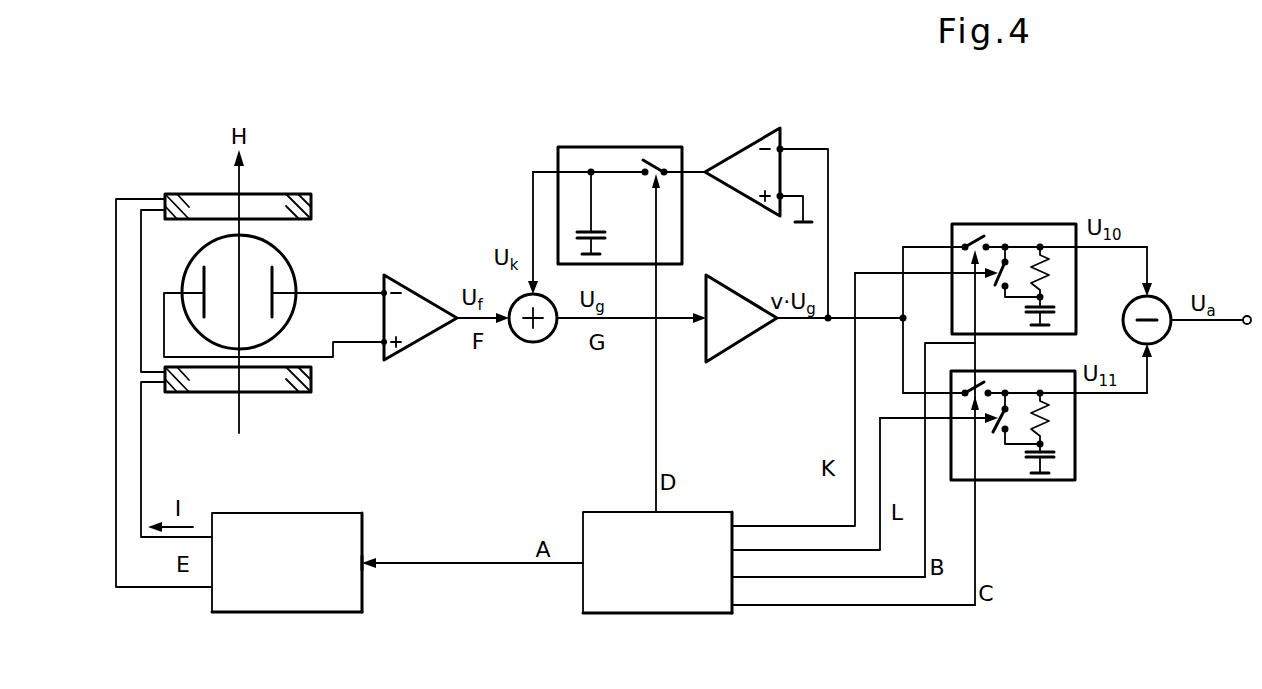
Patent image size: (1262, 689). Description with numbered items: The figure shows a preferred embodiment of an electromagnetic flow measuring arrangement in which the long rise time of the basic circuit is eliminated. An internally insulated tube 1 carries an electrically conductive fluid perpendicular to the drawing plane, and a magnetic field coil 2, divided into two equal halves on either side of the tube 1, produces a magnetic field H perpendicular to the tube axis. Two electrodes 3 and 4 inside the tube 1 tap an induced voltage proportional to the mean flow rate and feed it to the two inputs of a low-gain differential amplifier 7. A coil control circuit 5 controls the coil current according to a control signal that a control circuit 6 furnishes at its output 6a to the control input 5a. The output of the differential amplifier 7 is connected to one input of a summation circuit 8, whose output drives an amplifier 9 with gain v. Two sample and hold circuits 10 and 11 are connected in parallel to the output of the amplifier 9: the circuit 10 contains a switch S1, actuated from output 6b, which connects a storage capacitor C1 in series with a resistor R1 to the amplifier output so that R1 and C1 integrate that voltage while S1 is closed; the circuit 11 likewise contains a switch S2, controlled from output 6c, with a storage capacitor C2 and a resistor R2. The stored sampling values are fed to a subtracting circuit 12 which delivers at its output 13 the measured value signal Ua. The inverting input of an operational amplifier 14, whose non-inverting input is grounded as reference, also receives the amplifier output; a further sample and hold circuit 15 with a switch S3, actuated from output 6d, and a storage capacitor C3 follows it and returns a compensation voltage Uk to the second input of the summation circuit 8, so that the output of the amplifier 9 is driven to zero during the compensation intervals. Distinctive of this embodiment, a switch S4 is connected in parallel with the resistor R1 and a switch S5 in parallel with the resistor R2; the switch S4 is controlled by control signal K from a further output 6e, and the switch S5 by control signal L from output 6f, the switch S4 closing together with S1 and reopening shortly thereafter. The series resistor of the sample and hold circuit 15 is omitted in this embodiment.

The tube 1 is at (268, 255).
The magnetic field coil 2 is at (312, 205).
The electrode 3 is at (202, 278).
The electrode 4 is at (274, 307).
The coil control circuit 5 is at (293, 613).
The control input 5a is at (365, 570).
The control circuit 6 is at (632, 612).
The output 6a is at (581, 566).
The output 6b is at (733, 578).
The output 6c is at (733, 612).
The output 6d is at (652, 510).
The further output 6e is at (735, 519).
The output 6f is at (733, 549).
The differential amplifier 7 is at (414, 297).
The summation circuit 8 is at (537, 343).
The amplifier 9 is at (734, 334).
The sample and hold circuit 10 is at (1053, 232).
The sample and hold circuit 11 is at (1059, 480).
The subtracting circuit 12 is at (1160, 333).
The output 13 is at (1248, 316).
The operational amplifier 14 is at (744, 158).
The sample and hold circuit 15 is at (574, 153).
The switch S1 is at (972, 233).
The switch S2 is at (983, 381).
The switch S3 is at (649, 156).
The switch S4 is at (998, 280).
The switch S5 is at (1003, 422).
The resistor R1 is at (1022, 265).
The resistor R2 is at (1048, 423).
The storage capacitor C1 is at (1028, 312).
The storage capacitor C2 is at (1030, 461).
The storage capacitor C3 is at (606, 239).